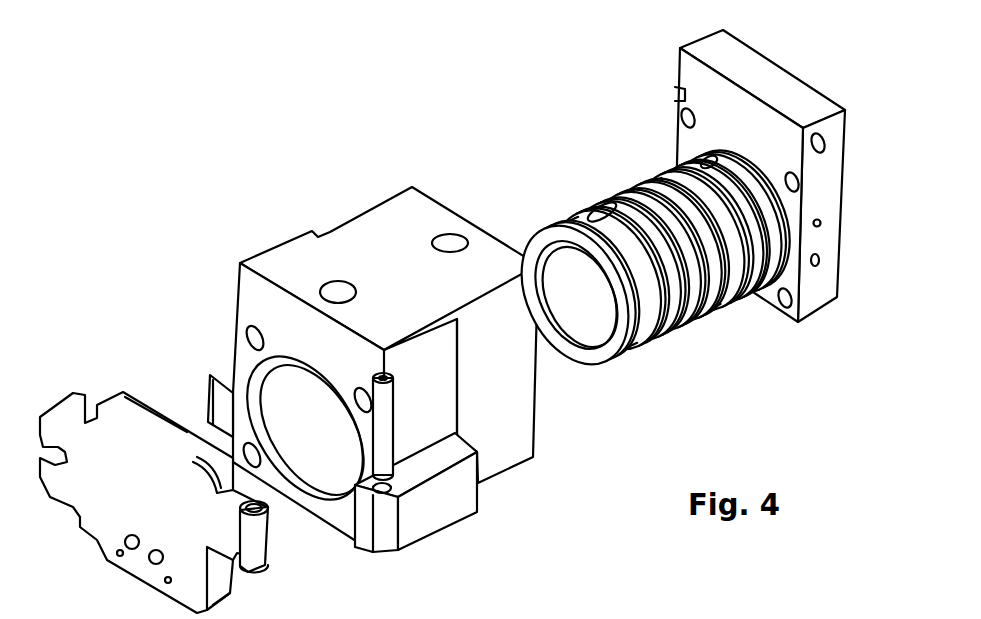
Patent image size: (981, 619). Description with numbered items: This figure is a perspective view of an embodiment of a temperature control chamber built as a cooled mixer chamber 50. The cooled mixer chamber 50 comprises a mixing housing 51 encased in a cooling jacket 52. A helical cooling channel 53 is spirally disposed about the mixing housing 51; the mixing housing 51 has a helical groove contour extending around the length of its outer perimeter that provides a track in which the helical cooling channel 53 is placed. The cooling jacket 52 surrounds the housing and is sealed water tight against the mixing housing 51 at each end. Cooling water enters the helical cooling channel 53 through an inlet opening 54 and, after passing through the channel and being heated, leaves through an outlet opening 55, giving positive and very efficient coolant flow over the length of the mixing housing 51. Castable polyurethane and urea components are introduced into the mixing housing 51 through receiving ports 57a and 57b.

The cooled mixer chamber 50 is at (296, 175).
The mixing housing 51 is at (775, 62).
The cooling jacket 52 is at (478, 513).
The helical cooling channel 53 is at (693, 335).
The inlet opening 54 is at (446, 238).
The outlet opening 55 is at (330, 290).
The receiving port 57a is at (818, 222).
The receiving port 57b is at (820, 263).